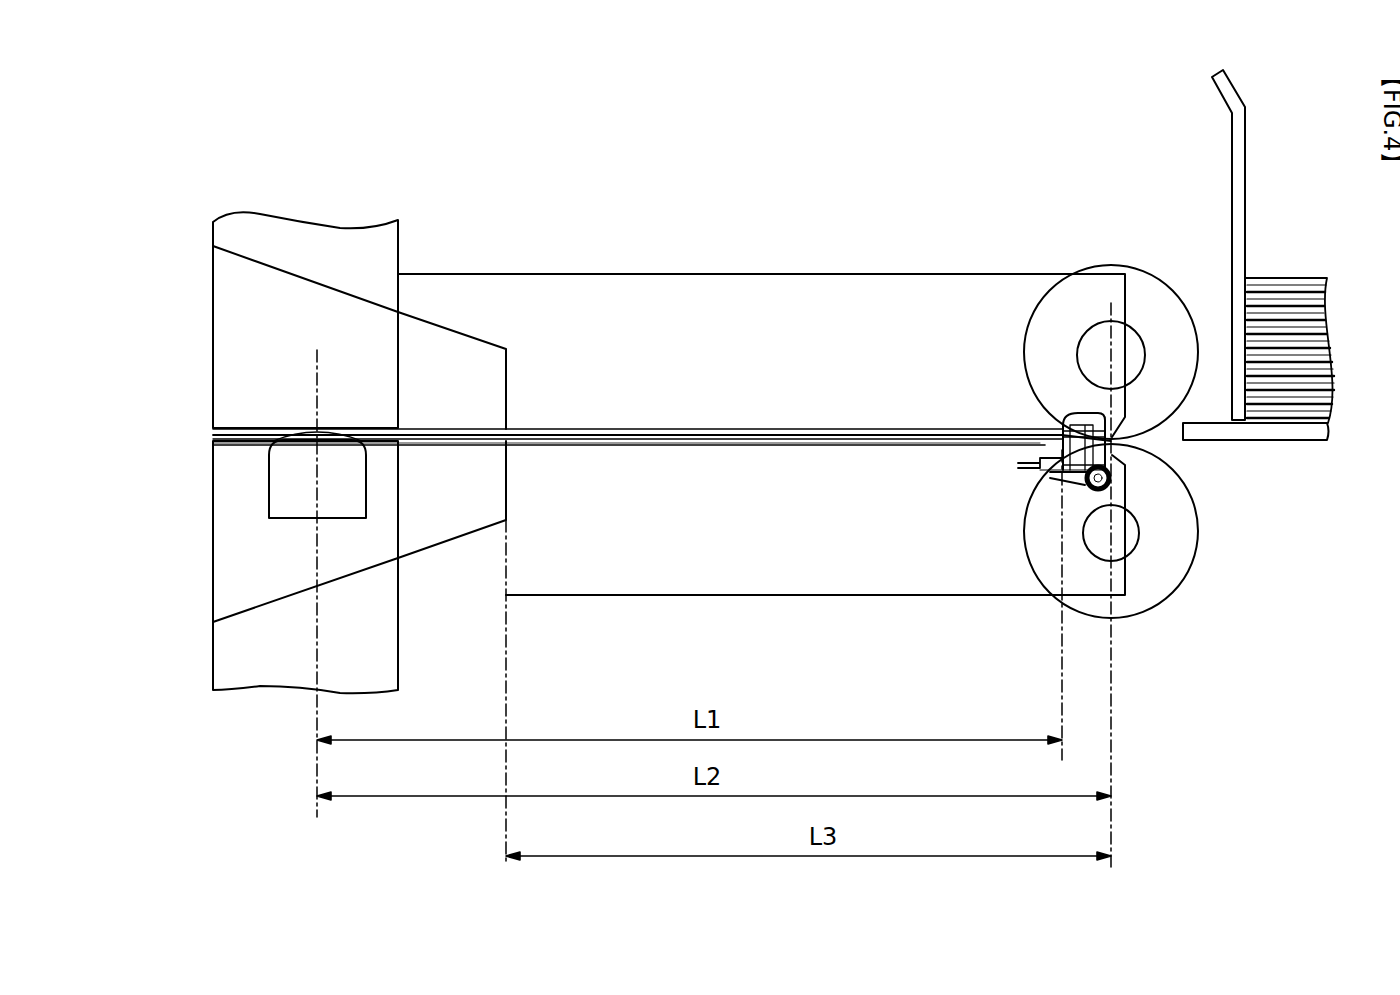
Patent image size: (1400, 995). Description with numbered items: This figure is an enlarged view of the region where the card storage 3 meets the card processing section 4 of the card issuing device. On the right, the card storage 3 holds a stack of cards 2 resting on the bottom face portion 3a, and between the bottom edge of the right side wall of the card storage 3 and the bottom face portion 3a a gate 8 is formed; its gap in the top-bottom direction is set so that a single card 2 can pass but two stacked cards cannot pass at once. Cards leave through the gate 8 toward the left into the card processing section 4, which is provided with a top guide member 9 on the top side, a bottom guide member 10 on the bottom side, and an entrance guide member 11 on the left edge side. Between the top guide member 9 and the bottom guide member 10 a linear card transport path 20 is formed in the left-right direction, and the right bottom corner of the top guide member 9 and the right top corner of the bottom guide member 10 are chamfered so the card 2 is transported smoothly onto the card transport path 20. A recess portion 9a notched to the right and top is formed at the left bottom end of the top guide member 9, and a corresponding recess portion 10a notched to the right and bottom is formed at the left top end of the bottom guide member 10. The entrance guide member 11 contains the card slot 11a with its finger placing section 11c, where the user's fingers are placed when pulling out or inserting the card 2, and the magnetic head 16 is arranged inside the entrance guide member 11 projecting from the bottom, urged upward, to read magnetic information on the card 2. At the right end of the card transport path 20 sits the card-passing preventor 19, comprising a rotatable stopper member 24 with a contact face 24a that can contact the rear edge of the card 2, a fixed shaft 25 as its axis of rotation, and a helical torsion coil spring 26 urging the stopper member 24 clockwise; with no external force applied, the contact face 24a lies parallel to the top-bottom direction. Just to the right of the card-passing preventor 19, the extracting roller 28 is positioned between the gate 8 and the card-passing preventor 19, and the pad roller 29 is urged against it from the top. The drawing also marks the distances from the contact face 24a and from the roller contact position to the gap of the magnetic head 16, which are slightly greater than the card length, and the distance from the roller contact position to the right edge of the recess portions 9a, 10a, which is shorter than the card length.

The card 2 is at (652, 431).
The card storage 3 is at (1250, 133).
The bottom face portion 3a is at (1288, 443).
The card processing section 4 is at (522, 208).
The gate 8 is at (1224, 439).
The top guide member 9 is at (893, 272).
The recess portion 9a is at (452, 370).
The bottom guide member 10 is at (877, 598).
The recess portion 10a is at (452, 499).
The entrance guide member 11 is at (214, 661).
The card slot 11a is at (223, 388).
The finger placing section 11c is at (305, 434).
The magnetic head 16 is at (268, 483).
The card-passing preventor 19 is at (1006, 482).
The card transport path 20 is at (784, 442).
The stopper member 24 is at (1073, 416).
The contact face 24a is at (1050, 432).
The fixed shaft 25 is at (1112, 482).
The helical torsion coil spring 26 is at (1053, 480).
The extracting roller 28 is at (1183, 582).
The pad roller 29 is at (1136, 266).